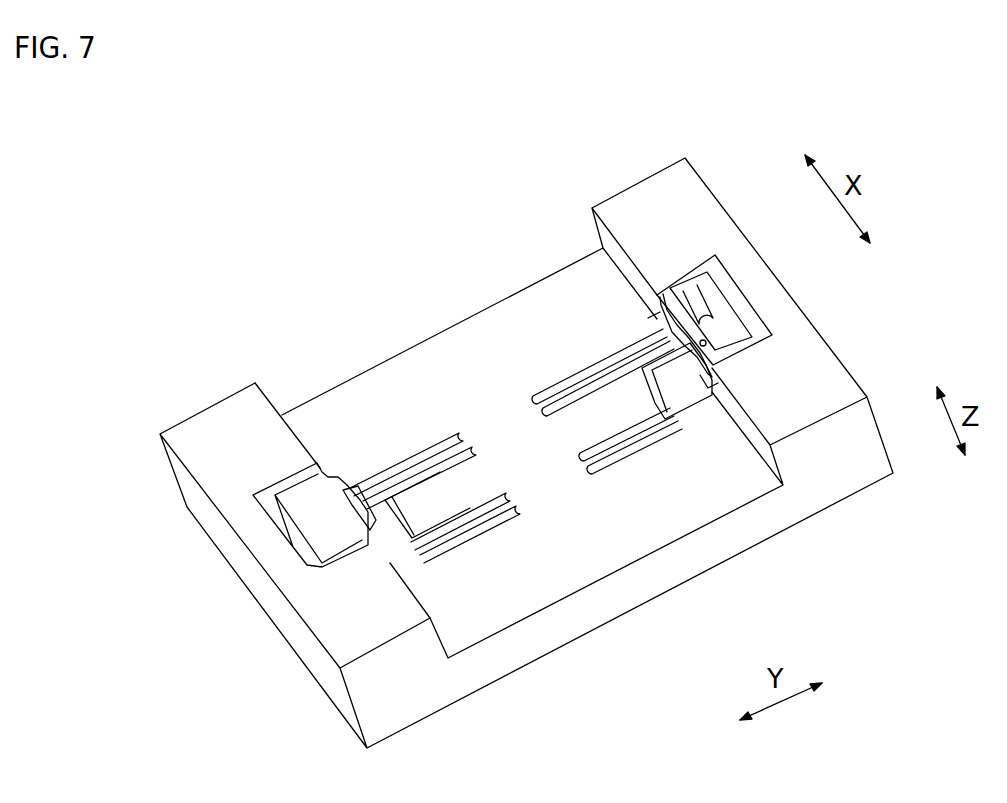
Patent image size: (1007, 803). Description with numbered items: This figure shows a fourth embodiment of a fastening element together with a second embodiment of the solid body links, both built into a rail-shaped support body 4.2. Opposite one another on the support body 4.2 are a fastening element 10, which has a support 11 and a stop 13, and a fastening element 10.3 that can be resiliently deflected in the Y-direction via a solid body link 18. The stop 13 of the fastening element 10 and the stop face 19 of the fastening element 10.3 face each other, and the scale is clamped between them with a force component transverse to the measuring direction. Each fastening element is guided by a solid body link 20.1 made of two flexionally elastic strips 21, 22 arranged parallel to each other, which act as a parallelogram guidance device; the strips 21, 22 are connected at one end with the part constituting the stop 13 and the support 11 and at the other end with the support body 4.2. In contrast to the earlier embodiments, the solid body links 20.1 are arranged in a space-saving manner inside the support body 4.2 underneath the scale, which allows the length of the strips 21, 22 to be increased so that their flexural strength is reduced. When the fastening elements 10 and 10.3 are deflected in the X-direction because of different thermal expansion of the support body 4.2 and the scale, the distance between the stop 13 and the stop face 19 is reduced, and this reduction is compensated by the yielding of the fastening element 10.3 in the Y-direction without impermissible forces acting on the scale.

The support body 4.2 is at (217, 423).
The fastening element 10 is at (328, 463).
The fastening element 10.3 is at (653, 322).
The support 11 is at (385, 537).
The stop 13 is at (360, 480).
The solid body link 18 is at (683, 290).
The stop face 19 is at (716, 395).
The solid body link 20.1 is at (487, 553).
The flexionally elastic strip 21 is at (428, 460).
The flexionally elastic strip 22 is at (481, 500).